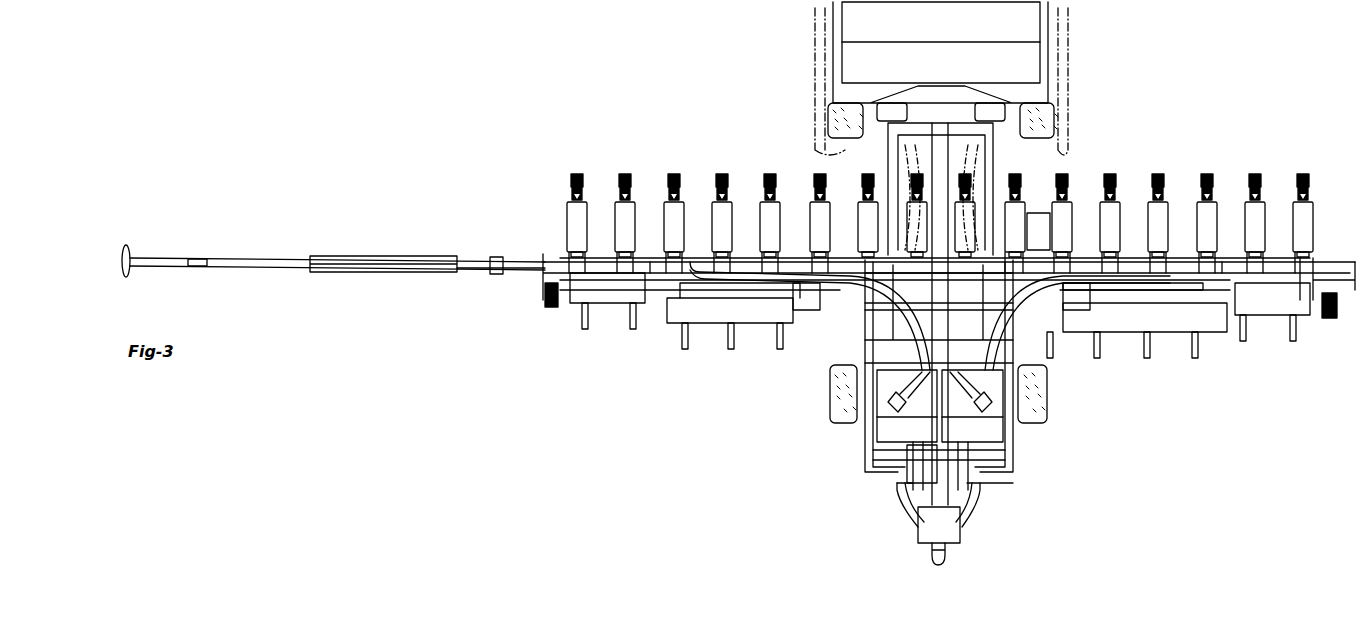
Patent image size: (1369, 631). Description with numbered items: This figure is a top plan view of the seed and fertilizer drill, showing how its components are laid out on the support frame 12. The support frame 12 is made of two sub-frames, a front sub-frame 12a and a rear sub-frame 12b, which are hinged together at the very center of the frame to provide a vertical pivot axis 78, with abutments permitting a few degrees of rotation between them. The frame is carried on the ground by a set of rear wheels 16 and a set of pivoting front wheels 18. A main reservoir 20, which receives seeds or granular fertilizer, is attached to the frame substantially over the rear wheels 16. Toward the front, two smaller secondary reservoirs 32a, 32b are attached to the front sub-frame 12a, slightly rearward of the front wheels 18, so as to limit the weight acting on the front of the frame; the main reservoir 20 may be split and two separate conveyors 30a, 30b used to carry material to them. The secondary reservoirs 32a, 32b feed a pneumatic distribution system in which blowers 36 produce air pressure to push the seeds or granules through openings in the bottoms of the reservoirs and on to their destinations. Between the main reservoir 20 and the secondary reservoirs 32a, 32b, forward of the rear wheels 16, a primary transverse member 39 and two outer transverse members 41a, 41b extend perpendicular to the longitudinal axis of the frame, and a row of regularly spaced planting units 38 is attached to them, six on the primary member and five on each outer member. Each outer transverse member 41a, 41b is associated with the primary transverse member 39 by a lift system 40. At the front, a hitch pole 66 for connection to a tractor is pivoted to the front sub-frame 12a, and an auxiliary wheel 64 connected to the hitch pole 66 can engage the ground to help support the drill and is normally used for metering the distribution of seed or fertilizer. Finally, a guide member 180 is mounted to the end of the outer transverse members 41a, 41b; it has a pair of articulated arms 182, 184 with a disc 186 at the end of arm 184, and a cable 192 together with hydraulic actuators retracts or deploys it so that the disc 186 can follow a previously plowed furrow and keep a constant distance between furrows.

The support frame 12 is at (887, 133).
The front sub-frame 12a is at (1012, 456).
The rear sub-frame 12b is at (990, 163).
The rear wheels 16 is at (838, 113).
The pivoting front wheels 18 is at (832, 410).
The main reservoir 20 is at (1000, 31).
The conveyor 30a is at (910, 385).
The conveyor 30b is at (985, 385).
The secondary reservoir 32a is at (886, 428).
The secondary reservoir 32b is at (990, 430).
The blowers 36 is at (897, 488).
The planting units 38 is at (588, 186).
The primary transverse member 39 is at (797, 255).
The lift system 40 is at (803, 312).
The outer transverse member 41a is at (650, 280).
The outer transverse member 41b is at (1222, 288).
The auxiliary wheel 64 is at (928, 447).
The hitch pole 66 is at (893, 505).
The vertical pivot axis 78 is at (935, 245).
The guide member 180 is at (372, 250).
The articulated arm 182 is at (456, 272).
The articulated arm 184 is at (280, 258).
The disc 186 is at (130, 246).
The cable 192 is at (450, 257).